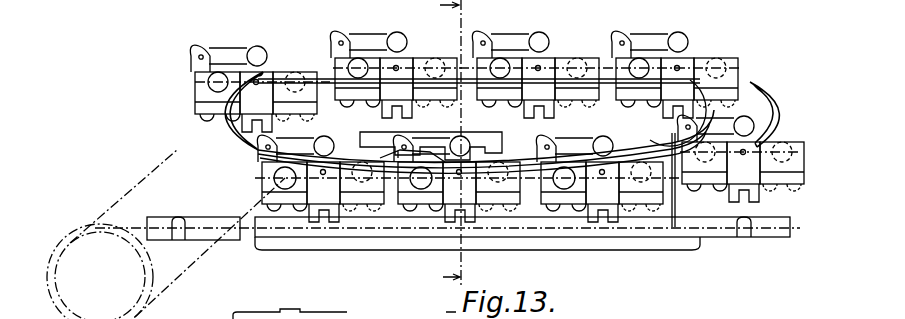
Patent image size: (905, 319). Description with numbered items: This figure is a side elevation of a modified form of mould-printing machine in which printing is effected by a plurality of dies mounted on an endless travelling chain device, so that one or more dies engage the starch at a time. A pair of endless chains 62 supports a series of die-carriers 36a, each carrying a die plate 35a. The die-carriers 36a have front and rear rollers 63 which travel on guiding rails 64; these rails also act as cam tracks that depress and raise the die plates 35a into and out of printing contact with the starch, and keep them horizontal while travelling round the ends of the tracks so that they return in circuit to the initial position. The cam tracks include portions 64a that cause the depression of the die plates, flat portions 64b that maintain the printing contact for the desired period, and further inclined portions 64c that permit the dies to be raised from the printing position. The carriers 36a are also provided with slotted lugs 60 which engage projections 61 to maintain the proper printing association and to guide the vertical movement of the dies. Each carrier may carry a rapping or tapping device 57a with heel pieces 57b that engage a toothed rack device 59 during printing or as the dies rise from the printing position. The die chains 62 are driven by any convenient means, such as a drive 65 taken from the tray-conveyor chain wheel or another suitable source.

The die plate 35a is at (727, 93).
The die-carrier 36a is at (555, 57).
The rapping or tapping device 57a is at (367, 44).
The heel pieces 57b is at (614, 33).
The cam block 59 is at (502, 143).
The slotted lugs 60 is at (590, 208).
The projections 61 is at (607, 234).
The endless chains 62 is at (601, 64).
The rollers 63 is at (224, 76).
The guiding rails 64 is at (325, 81).
The depressing portions of cam tracks 64a is at (375, 150).
The flat portions of cam tracks 64b is at (447, 168).
The inclined portions of cam tracks 64c is at (673, 238).
The driving means 65 is at (220, 113).